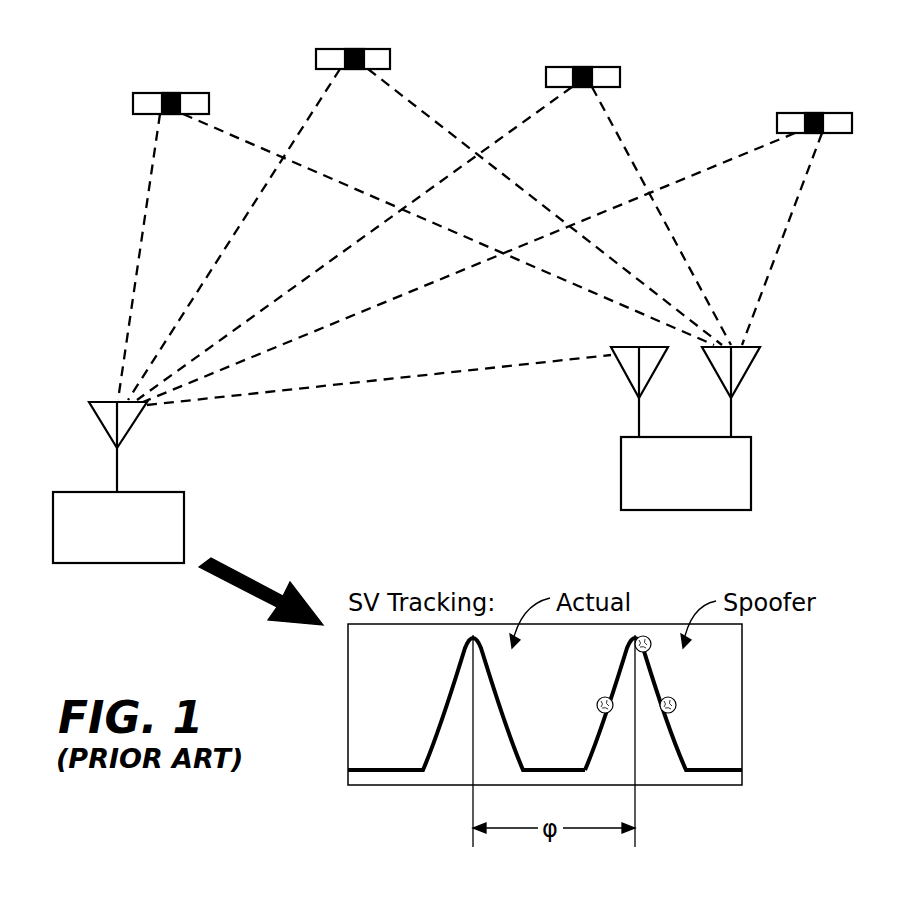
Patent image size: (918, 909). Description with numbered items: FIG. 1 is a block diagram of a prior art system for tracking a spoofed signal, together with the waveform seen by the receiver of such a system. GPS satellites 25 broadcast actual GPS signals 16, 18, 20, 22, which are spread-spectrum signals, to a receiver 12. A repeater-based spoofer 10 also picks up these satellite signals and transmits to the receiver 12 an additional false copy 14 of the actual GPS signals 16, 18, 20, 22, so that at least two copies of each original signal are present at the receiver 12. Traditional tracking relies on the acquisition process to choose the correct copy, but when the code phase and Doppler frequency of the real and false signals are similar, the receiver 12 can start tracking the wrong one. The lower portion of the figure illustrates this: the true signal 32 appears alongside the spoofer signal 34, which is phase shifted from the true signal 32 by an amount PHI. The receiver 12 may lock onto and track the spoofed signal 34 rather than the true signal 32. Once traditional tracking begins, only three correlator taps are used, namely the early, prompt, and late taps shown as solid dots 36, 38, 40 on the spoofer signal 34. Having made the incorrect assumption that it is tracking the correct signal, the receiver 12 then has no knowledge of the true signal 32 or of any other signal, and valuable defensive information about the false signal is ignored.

The repeater-based spoofer 10 is at (751, 466).
The receiver 12 is at (184, 517).
The false copy 14 is at (432, 375).
The actual GPS signal 16 is at (142, 240).
The actual GPS signal 18 is at (243, 222).
The actual GPS signal 20 is at (345, 245).
The actual GPS signal 22 is at (433, 283).
The GPS satellite 25 is at (170, 92).
The true signal 32 is at (433, 727).
The spoofer signal 34 is at (610, 670).
The early correlator tap 36 is at (599, 700).
The prompt correlator tap 38 is at (645, 636).
The late correlator tap 40 is at (675, 700).